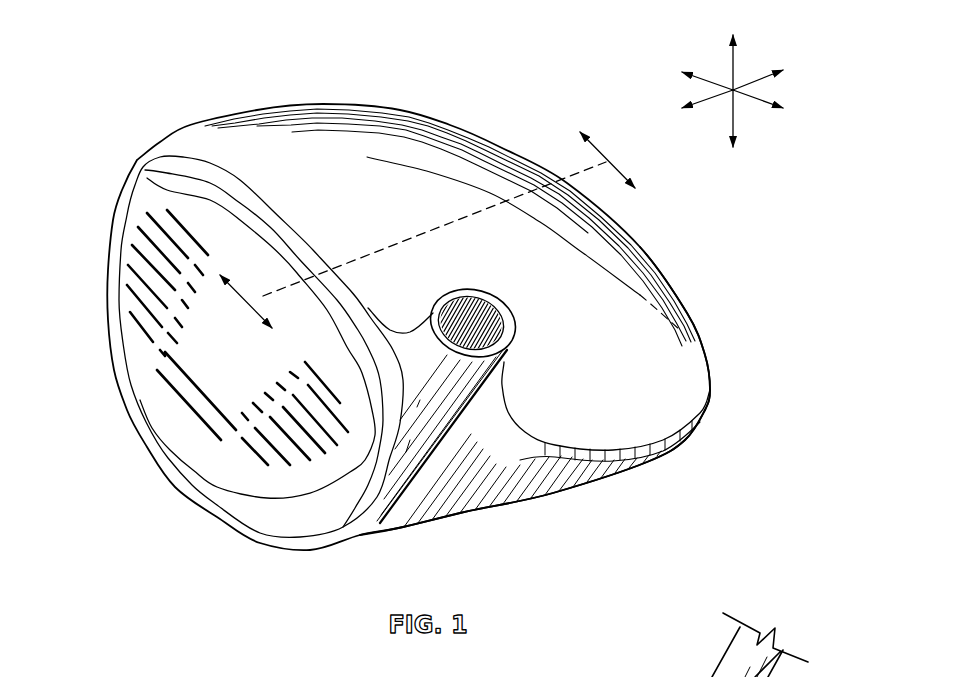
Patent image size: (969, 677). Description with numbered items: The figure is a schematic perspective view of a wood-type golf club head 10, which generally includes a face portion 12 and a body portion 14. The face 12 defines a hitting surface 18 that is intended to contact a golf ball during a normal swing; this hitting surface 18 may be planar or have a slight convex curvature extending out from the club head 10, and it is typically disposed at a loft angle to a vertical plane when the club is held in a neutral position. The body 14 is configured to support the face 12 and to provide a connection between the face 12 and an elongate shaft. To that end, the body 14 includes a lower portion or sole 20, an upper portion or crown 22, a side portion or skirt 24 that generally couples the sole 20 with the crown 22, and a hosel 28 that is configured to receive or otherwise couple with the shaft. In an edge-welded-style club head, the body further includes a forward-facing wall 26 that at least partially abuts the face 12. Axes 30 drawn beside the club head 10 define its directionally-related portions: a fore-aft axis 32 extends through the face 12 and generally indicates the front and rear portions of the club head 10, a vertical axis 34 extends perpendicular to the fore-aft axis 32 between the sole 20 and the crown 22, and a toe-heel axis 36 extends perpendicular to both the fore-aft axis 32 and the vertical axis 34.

The golf club head 10 is at (123, 83).
The face portion 12 is at (206, 453).
The body portion 14 is at (604, 285).
The hitting surface 18 is at (172, 404).
The lower portion 20 is at (544, 500).
The upper portion 22 is at (342, 147).
The side portion 24 is at (712, 366).
The forward-facing wall 26 is at (168, 181).
The hosel 28 is at (505, 364).
The axes 30 is at (676, 40).
The fore-aft axis 32 is at (757, 79).
The vertical axis 34 is at (736, 120).
The toe-heel axis 36 is at (760, 100).